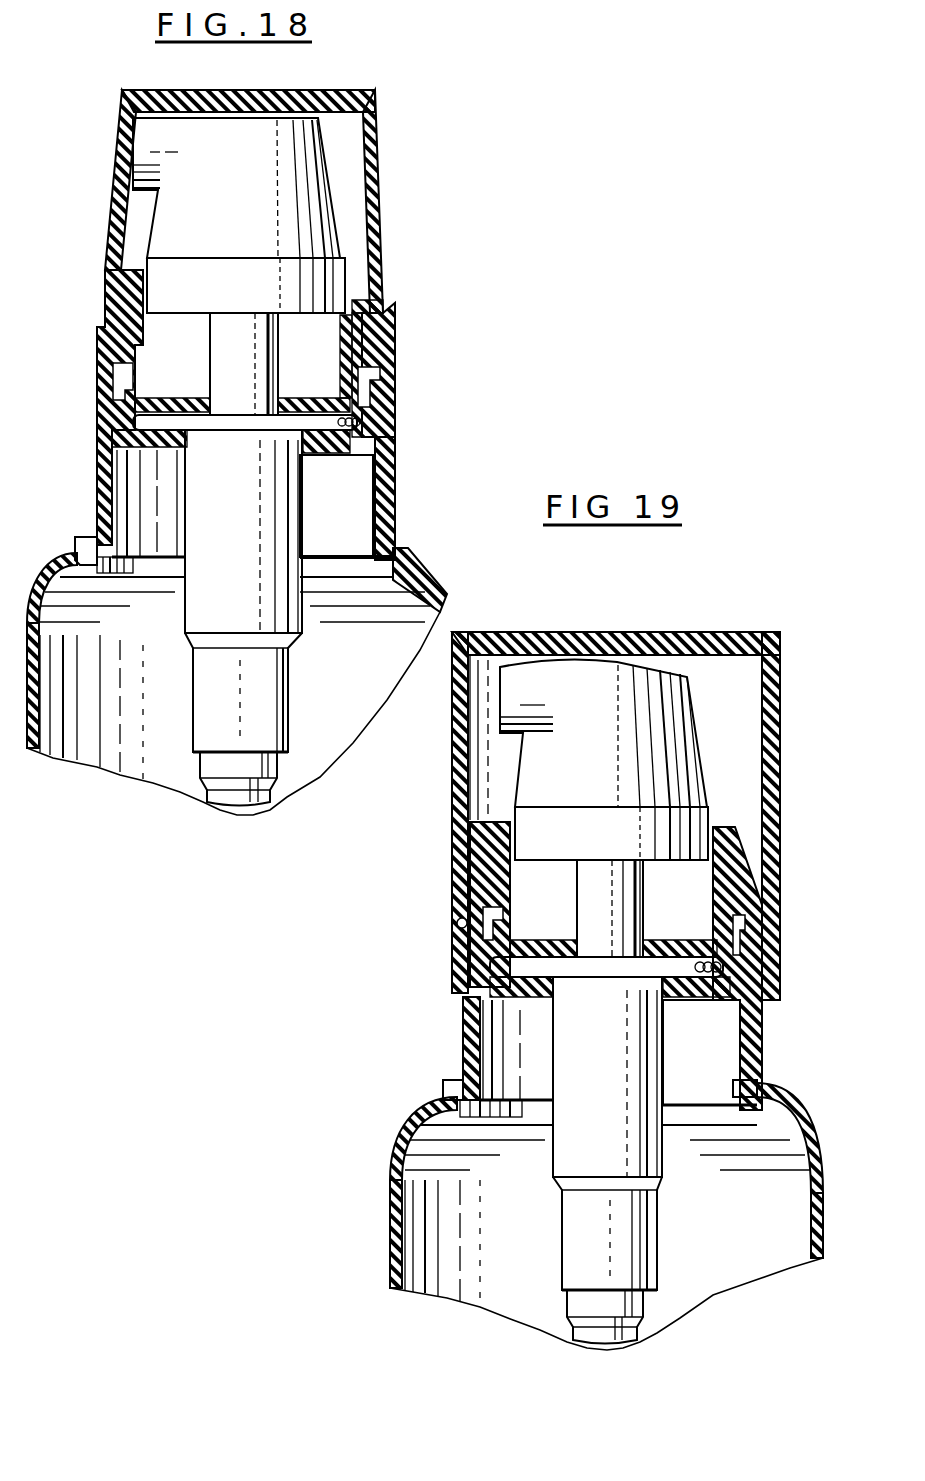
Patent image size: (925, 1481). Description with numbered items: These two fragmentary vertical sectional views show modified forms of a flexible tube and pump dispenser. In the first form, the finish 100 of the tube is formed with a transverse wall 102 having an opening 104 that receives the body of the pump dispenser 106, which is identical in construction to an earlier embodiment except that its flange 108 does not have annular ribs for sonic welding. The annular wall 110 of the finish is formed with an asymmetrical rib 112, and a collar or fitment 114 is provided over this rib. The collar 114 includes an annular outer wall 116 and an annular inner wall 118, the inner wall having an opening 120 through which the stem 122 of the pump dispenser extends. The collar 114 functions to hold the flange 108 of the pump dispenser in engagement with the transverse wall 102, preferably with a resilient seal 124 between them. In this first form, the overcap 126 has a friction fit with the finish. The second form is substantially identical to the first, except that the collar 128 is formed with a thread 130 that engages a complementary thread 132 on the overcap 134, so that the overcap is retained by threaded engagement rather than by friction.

In FIG. 18, the finish 100 is at (387, 477).
In FIG. 18, the transverse wall 102 is at (332, 447).
In FIG. 18, the opening 104 is at (190, 443).
In FIG. 18, the pump dispenser 106 is at (305, 640).
In FIG. 18, the flange 108 is at (393, 428).
In FIG. 18, the annular wall 110 is at (120, 375).
In FIG. 18, the asymmetrical rib 112 is at (392, 410).
In FIG. 18, the collar 114 is at (363, 300).
In FIG. 18, the annular outer wall 116 is at (387, 383).
In FIG. 18, the annular inner wall 118 is at (352, 378).
In FIG. 18, the opening 120 is at (220, 393).
In FIG. 18, the stem 122 is at (237, 327).
In FIG. 18, the resilient seal 124 is at (120, 443).
In FIG. 18, the overcap 126 is at (381, 173).
In FIG. 19, the collar 128 is at (483, 867).
In FIG. 19, the thread 130 is at (457, 918).
In FIG. 19, the thread 132 is at (470, 955).
In FIG. 19, the overcap 134 is at (453, 830).